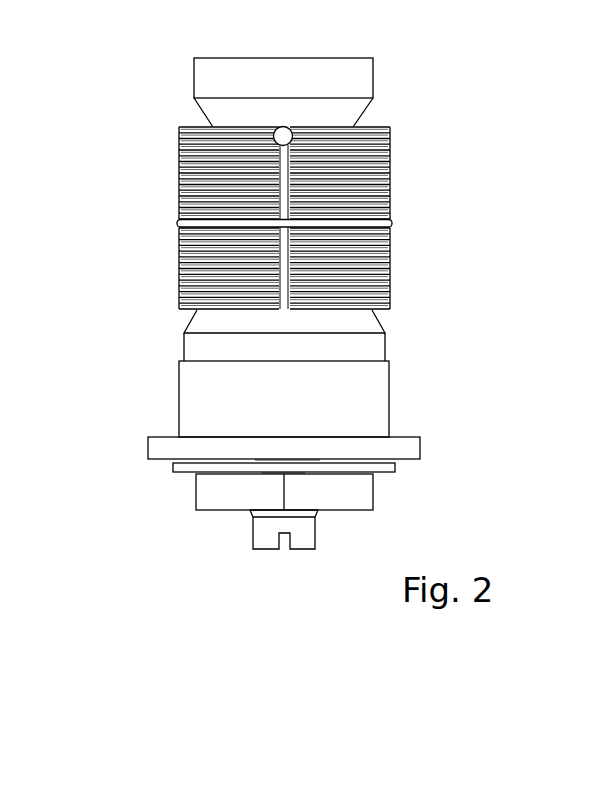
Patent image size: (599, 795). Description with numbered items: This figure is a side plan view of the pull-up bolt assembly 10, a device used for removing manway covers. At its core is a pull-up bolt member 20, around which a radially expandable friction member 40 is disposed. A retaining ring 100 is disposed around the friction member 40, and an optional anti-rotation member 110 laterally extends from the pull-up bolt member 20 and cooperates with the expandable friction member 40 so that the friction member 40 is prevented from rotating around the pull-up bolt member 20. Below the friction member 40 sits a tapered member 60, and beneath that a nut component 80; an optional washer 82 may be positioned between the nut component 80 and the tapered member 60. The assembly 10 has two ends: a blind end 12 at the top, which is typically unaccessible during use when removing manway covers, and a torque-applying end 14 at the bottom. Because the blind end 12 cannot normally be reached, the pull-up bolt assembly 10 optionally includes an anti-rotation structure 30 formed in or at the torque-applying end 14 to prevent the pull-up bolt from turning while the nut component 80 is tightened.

The pull-up bolt assembly 10 is at (138, 195).
The blind end 12 is at (220, 58).
The torque-applying end 14 is at (232, 530).
The pull-up bolt member 20 is at (373, 77).
The anti-rotation structure 30 is at (285, 549).
The radially expandable friction member 40 is at (388, 176).
The tapered member 60 is at (178, 392).
The nut component 80 is at (197, 493).
The washer 82 is at (173, 467).
The retaining ring 100 is at (391, 222).
The anti-rotation member 110 is at (282, 128).